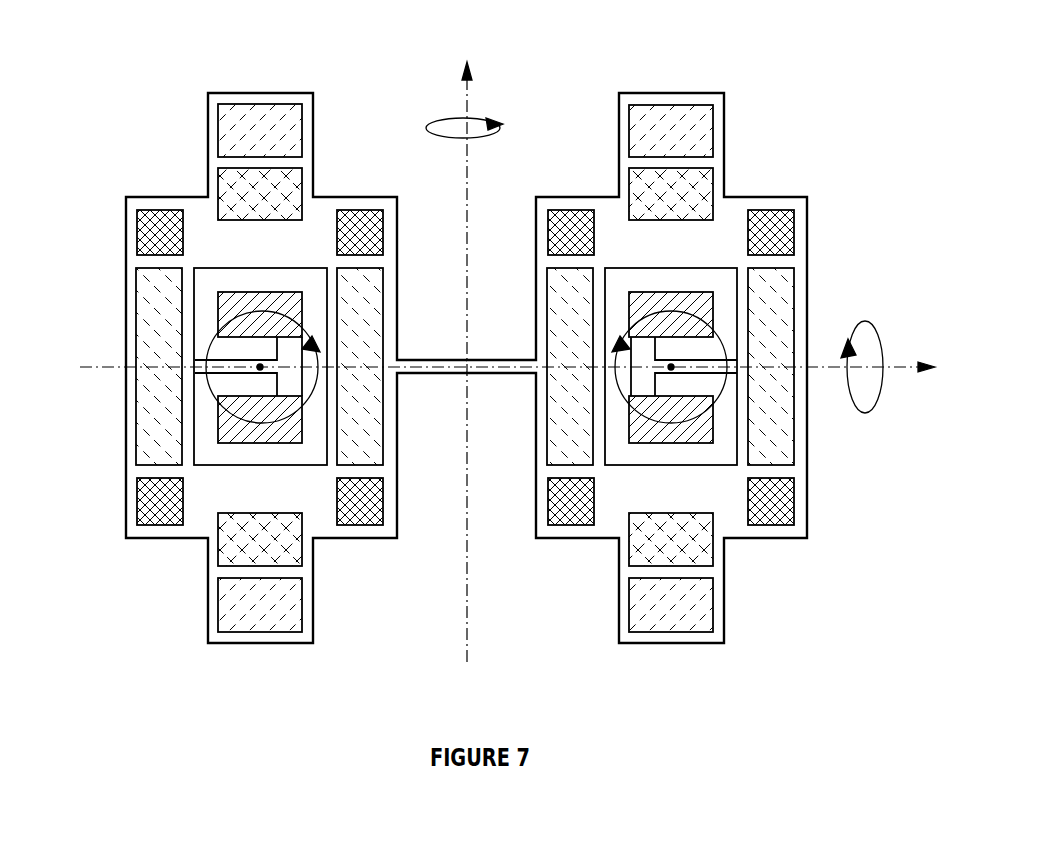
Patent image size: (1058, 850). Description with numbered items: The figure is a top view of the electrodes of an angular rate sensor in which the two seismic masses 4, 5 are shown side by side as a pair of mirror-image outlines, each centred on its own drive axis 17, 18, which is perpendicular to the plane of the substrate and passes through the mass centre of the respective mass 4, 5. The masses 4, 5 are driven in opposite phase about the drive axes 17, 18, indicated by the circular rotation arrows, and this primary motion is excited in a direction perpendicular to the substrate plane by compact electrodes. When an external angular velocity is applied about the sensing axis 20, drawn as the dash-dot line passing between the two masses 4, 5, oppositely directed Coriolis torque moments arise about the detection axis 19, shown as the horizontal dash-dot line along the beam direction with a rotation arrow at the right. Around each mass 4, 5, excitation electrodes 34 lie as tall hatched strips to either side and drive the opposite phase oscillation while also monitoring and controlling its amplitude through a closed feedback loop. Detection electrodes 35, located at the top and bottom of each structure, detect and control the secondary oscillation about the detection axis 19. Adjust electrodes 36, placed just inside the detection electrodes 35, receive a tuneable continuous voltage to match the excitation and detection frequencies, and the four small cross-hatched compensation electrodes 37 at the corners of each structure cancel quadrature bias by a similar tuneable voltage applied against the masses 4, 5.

The seismic mass 4 is at (243, 98).
The seismic mass 5 is at (667, 98).
The drive axis 17 is at (270, 316).
The drive axis 18 is at (665, 320).
The detection axis 19 is at (895, 368).
The sensing axis 20 is at (467, 105).
The excitation electrodes 34 is at (147, 402).
The detection electrodes 35 is at (282, 125).
The adjust electrodes 36 is at (228, 186).
The compensation electrodes 37 is at (145, 233).